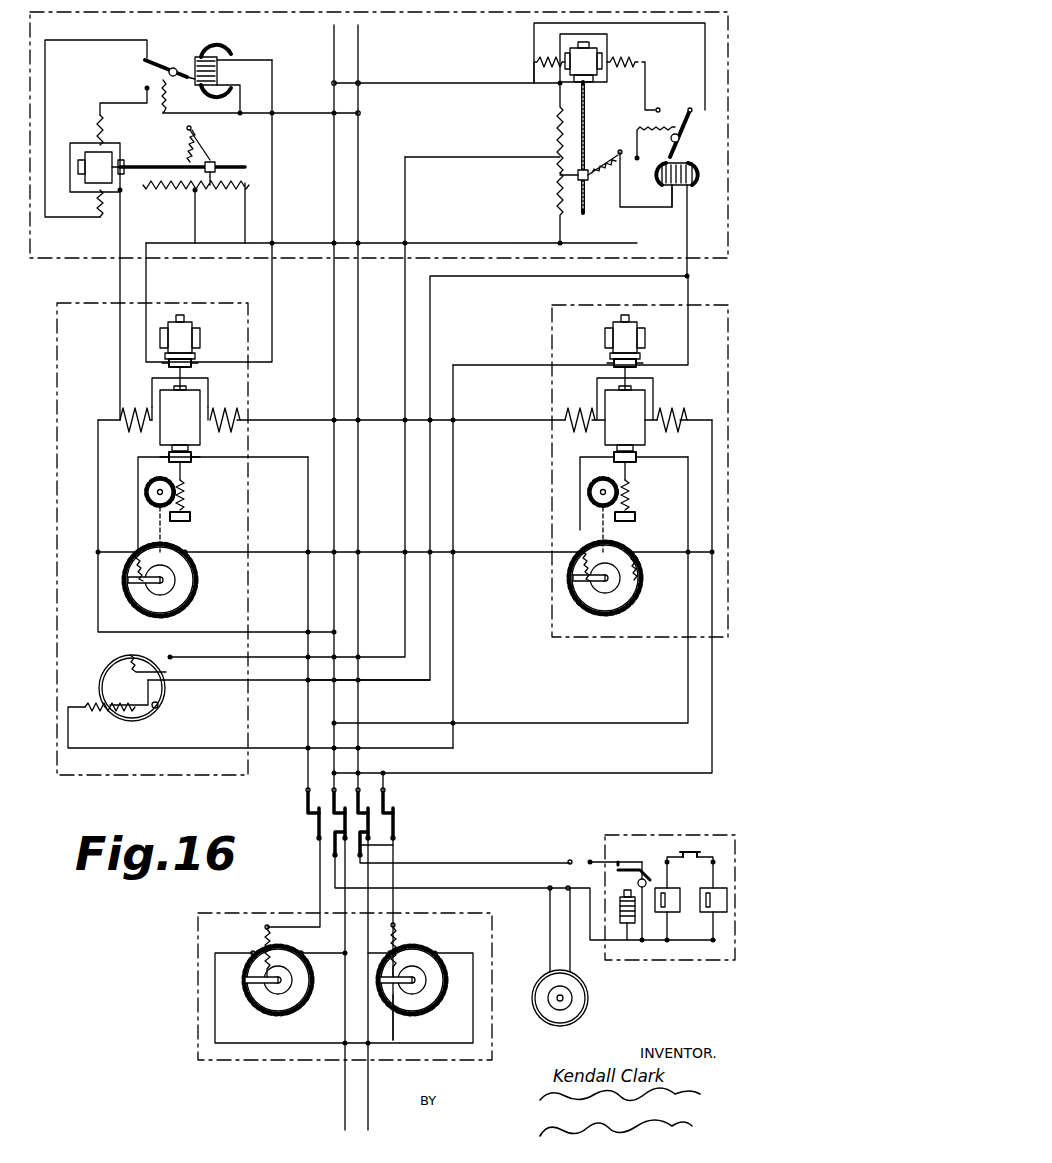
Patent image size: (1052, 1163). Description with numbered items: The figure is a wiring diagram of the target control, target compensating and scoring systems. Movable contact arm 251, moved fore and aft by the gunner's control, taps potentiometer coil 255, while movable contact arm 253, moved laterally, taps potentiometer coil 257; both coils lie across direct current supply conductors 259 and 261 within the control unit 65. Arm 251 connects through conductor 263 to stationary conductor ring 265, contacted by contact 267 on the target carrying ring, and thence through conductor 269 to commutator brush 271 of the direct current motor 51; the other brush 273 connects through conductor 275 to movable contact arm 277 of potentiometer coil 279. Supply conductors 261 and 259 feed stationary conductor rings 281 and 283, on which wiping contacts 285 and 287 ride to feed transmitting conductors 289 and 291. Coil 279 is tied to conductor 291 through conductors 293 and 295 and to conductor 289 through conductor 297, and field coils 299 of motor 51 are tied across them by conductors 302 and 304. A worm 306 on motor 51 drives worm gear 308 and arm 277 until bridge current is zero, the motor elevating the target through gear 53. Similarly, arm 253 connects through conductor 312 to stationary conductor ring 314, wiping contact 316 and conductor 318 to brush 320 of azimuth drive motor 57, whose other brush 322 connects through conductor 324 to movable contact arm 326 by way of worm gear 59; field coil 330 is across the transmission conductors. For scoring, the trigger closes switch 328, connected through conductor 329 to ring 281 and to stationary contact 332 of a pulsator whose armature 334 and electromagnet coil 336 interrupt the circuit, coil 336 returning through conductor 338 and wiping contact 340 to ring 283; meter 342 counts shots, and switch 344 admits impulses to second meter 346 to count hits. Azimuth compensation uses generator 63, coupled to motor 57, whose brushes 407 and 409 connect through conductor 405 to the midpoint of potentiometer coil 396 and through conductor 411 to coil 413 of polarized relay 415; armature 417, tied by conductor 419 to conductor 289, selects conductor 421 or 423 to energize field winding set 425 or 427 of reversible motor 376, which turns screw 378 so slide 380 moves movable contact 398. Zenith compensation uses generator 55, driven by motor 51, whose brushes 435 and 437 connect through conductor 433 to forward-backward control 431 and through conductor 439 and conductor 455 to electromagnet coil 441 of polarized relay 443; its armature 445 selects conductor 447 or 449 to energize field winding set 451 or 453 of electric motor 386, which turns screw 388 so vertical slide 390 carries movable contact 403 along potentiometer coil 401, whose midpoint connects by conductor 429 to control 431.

The polarized relay 415 is at (183, 50).
The conductor 421 is at (122, 45).
The armature or contact member 417 is at (150, 72).
The coil 413 is at (218, 72).
The set of field windings 427 is at (100, 130).
The conductor 423 is at (136, 108).
The conductor 419 is at (317, 114).
The screw 378 is at (150, 167).
The slide 380 is at (212, 166).
The movable contact 398 is at (210, 180).
The set of field windings 425 is at (100, 205).
The potentiometer coil 396 is at (190, 194).
The conductor 405 is at (195, 225).
The reversible motor 376 is at (110, 190).
The conductor 411 is at (272, 272).
The set of field windings 453 is at (538, 62).
The electric motor 386 is at (583, 65).
The set of field windings 451 is at (604, 62).
The conductor 449 is at (705, 55).
The conductor 447 is at (645, 110).
The armature lever 445 is at (682, 114).
The potentiometer coil 401 is at (560, 135).
The screw 388 is at (586, 126).
The polarized relay 443 is at (720, 146).
The conductor 429 is at (515, 157).
The movable contact 403 is at (560, 185).
The vertical slide 390 is at (585, 180).
The electromagnet coil 441 is at (672, 200).
The conductor 439 is at (687, 245).
The conductor 455 is at (430, 314).
The generator 63 is at (190, 332).
The generator 55 is at (635, 332).
The commutator brush 435 is at (612, 363).
The brush 437 is at (638, 365).
The commutator brush 407 is at (166, 374).
The commutator brush 409 is at (196, 375).
The field coil 330 is at (418, 843).
The field coils 299 is at (629, 408).
The azimuth drive motor 57 is at (160, 437).
The direct current motor 51 is at (645, 437).
The brush 322 is at (165, 452).
The brush 320 is at (193, 460).
The commutator brush 273 is at (610, 457).
The commutator brush 271 is at (634, 463).
The worm gear 308 is at (590, 485).
The conductor 275 is at (588, 492).
The worm 306 is at (632, 498).
The conductor 324 is at (145, 492).
The worm gear 59 is at (192, 517).
The gear 53 is at (635, 517).
The conductor 302 is at (712, 520).
The conductor 297 is at (480, 554).
The movable contact arm 326 is at (138, 586).
The switch 328 is at (185, 595).
The movable contact arm 277 is at (580, 585).
The conductor 295 is at (667, 557).
The potentiometer coil 279 is at (626, 605).
The forward-backward control 431 is at (125, 725).
The conductor 433 is at (230, 748).
The conductor 318 is at (308, 700).
The transmitting conductor 289 is at (358, 700).
The transmitting conductor 291 is at (334, 718).
The conductor 269 is at (544, 723).
The conductor 293 is at (596, 773).
The wiping contact 287 is at (332, 790).
The wiping contact 285 is at (383, 790).
The wiping contact 316 is at (306, 799).
The stationary conductor ring 281 is at (386, 793).
The stationary conductor ring 314 is at (316, 826).
The contact 267 is at (385, 806).
The stationary conductor ring 265 is at (396, 830).
The stationary conductor ring 283 is at (333, 845).
The conductor 263 is at (395, 858).
The wiping contact 340 is at (335, 868).
The conductor 312 is at (320, 880).
The conductor 329 is at (518, 864).
The armature 334 is at (645, 872).
The stationary contact 332 is at (625, 868).
The switch 344 is at (686, 850).
The second meter 346 is at (715, 895).
The meter 342 is at (672, 898).
The electromagnet coil 336 is at (627, 924).
The conductor 338 is at (504, 888).
The movable contact arm 253 is at (245, 985).
The control unit 65 is at (178, 1046).
The potentiometer coil 257 is at (285, 1012).
The potentiometer coil 255 is at (407, 1016).
The movable contact arm 251 is at (393, 1040).
The direct current supply conductor 261 is at (345, 1088).
The direct current supply conductor 259 is at (368, 1085).
The conductor 304 is at (480, 420).